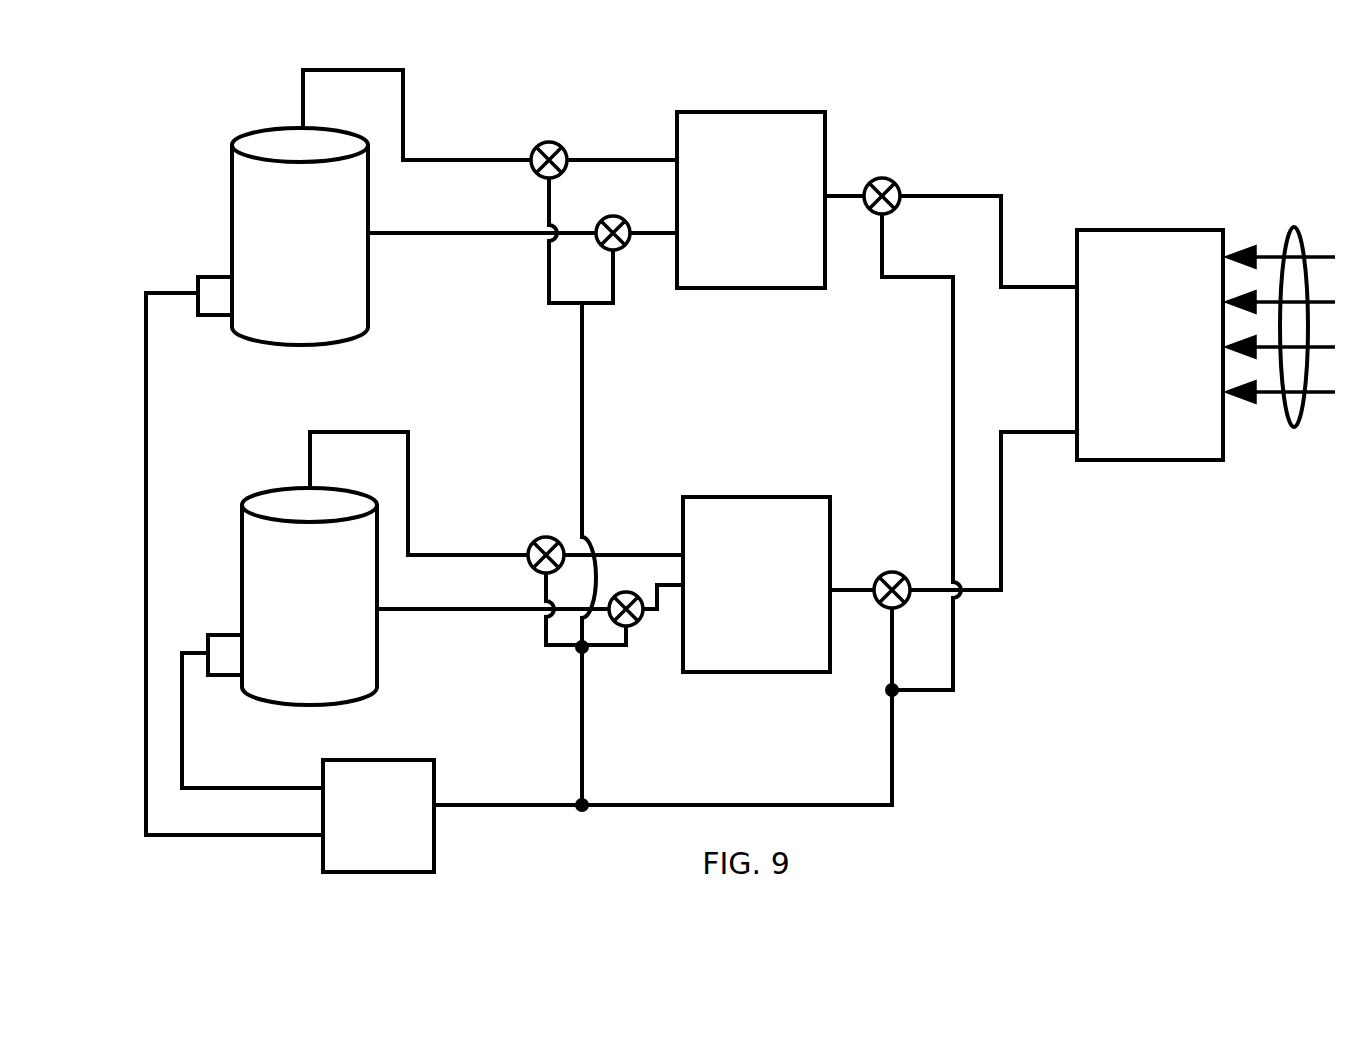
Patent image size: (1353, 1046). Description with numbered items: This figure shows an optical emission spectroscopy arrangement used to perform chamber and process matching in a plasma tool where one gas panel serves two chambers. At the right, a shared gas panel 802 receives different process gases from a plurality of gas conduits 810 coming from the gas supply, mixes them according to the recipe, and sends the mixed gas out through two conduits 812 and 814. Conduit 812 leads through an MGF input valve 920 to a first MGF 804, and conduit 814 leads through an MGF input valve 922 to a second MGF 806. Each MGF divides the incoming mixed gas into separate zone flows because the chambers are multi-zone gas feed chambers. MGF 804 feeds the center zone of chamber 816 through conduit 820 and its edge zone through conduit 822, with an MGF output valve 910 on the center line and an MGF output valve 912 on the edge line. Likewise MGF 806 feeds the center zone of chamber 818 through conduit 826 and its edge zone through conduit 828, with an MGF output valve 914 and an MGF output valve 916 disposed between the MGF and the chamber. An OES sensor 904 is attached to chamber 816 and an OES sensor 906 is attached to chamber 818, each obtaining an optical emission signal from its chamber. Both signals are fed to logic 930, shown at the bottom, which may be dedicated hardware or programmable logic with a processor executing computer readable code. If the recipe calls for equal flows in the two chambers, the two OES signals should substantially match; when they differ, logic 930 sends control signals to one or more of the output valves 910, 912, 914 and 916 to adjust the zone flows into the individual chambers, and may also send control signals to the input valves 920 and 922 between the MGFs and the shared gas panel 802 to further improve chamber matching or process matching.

The shared gas panel 802 is at (1150, 345).
The MGF 804 is at (751, 200).
The MGF 806 is at (756, 584).
The gas conduits 810 is at (1297, 223).
The conduit 812 is at (1053, 282).
The conduit 814 is at (1025, 433).
The chamber 816 is at (300, 236).
The chamber 818 is at (309, 596).
The conduit 820 is at (500, 157).
The conduit 822 is at (485, 235).
The conduit 826 is at (473, 553).
The conduit 828 is at (487, 613).
The OES sensor 904 is at (227, 277).
The OES sensor 906 is at (227, 635).
The MGF output valve 910 is at (555, 140).
The MGF output valve 912 is at (618, 252).
The MGF output valve 914 is at (548, 537).
The MGF output valve 916 is at (630, 627).
The MGF input valve 920 is at (888, 173).
The MGF input valve 922 is at (893, 570).
The logic 930 is at (378, 816).